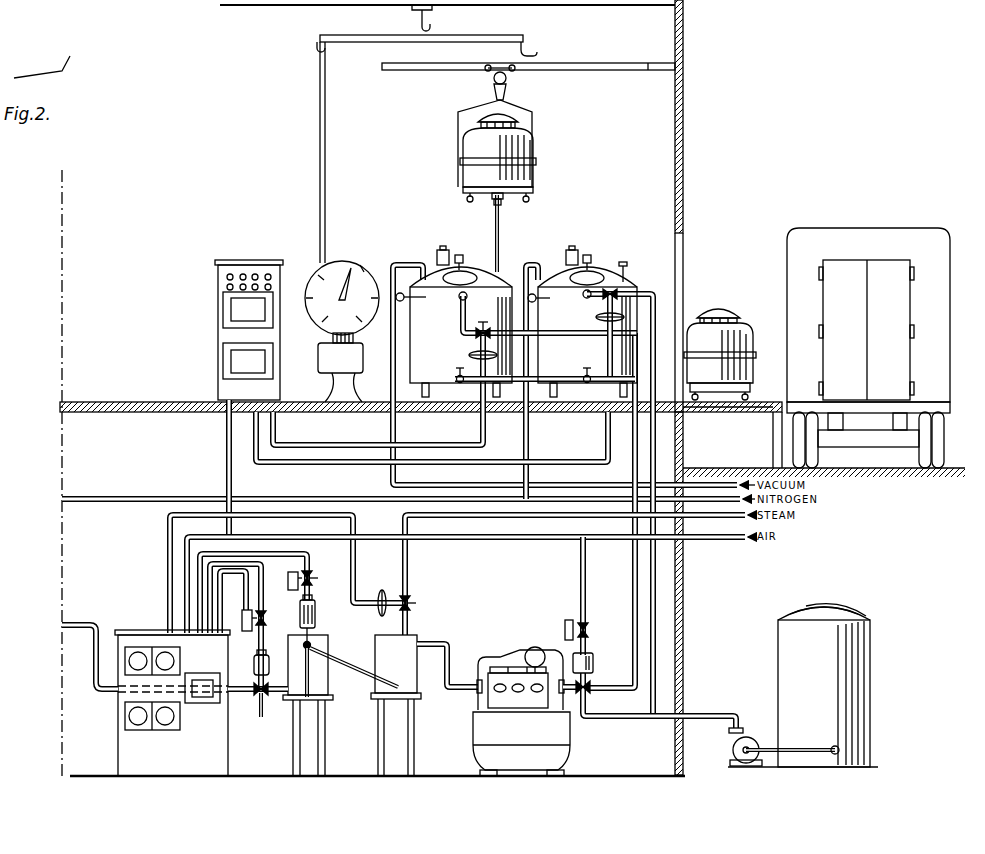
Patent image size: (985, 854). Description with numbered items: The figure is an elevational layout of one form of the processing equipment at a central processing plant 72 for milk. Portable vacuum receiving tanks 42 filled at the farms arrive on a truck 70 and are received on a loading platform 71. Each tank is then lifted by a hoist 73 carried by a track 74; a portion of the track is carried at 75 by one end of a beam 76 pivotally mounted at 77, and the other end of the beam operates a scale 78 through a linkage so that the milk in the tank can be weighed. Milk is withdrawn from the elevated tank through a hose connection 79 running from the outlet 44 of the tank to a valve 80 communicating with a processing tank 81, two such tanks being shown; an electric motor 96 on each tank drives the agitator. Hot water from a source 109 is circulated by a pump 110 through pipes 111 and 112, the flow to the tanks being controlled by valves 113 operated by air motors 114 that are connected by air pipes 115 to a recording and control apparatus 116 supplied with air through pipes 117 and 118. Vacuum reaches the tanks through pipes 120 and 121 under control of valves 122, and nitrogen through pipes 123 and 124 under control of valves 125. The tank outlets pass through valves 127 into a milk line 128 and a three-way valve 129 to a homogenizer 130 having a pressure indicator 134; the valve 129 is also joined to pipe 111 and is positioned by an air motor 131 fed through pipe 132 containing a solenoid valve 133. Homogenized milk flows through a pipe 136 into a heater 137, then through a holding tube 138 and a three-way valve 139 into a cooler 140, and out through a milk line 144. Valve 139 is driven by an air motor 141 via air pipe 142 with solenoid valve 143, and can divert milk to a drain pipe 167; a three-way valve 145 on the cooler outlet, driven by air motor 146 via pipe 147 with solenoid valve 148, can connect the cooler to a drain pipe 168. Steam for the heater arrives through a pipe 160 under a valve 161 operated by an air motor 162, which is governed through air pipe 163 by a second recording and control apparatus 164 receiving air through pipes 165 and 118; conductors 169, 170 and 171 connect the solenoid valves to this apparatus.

The portable vacuum receiving tank 42 is at (535, 147).
The outlet 44 is at (504, 206).
The truck 70 is at (940, 349).
The loading platform 71 is at (713, 407).
The central processing plant 72 is at (686, 130).
The hoist 73 is at (507, 80).
The track 74 is at (603, 66).
The track support point 75 is at (534, 53).
The beam 76 is at (420, 137).
The pivot mounting 77 is at (418, 24).
The scale 78 is at (320, 278).
The hose connection 79 is at (493, 223).
The valve 80 is at (460, 262).
The processing tank 81 is at (446, 336).
The electric motor 96 is at (444, 246).
The source of hot water 109 is at (780, 657).
The circulating pump 110 is at (750, 718).
The hot water pipe 111 is at (628, 720).
The hot water pipe 112 is at (656, 604).
The valve 113 is at (483, 328).
The air operated motor 114 is at (468, 353).
The air pipe 115 is at (432, 460).
The recording and control apparatus 116 is at (218, 337).
The air pipe 117 is at (226, 467).
The air pipe 118 is at (705, 540).
The vacuum pipe 120 is at (712, 482).
The vacuum pipe 121 is at (388, 428).
The valve 122 is at (383, 266).
The nitrogen pipe 123 is at (120, 498).
The nitrogen pipe 124 is at (410, 476).
The valve 125 is at (493, 297).
The valve 127 is at (456, 378).
The milk line 128 is at (632, 476).
The three-way valve 129 is at (588, 692).
The homogenizer 130 is at (502, 655).
The air motor 131 is at (592, 658).
The air pipe 132 is at (587, 578).
The solenoid valve 133 is at (590, 626).
The pressure indicator 134 is at (535, 647).
The pipe 136 is at (448, 694).
The heater 137 is at (402, 647).
The holding tube 138 is at (348, 660).
The three-way valve 139 is at (304, 645).
The cooler 140 is at (330, 686).
The air motor 141 is at (316, 619).
The air pipe 142 is at (311, 563).
The solenoid valve 143 is at (328, 579).
The milk line 144 is at (86, 623).
The three-way valve 145 is at (258, 694).
The air motor 146 is at (254, 659).
The air pipe 147 is at (263, 612).
The solenoid valve 148 is at (265, 617).
The steam pipe 160 is at (410, 566).
The steam valve 161 is at (412, 600).
The air motor 162 is at (382, 592).
The air pipe 163 is at (358, 522).
The recording and control apparatus 164 is at (145, 629).
The air pipe 165 is at (188, 563).
The drain pipe 167 is at (305, 680).
The drain pipe 168 is at (260, 714).
The conductor 169 is at (495, 541).
The conductor 170 is at (290, 572).
The conductor 171 is at (247, 608).